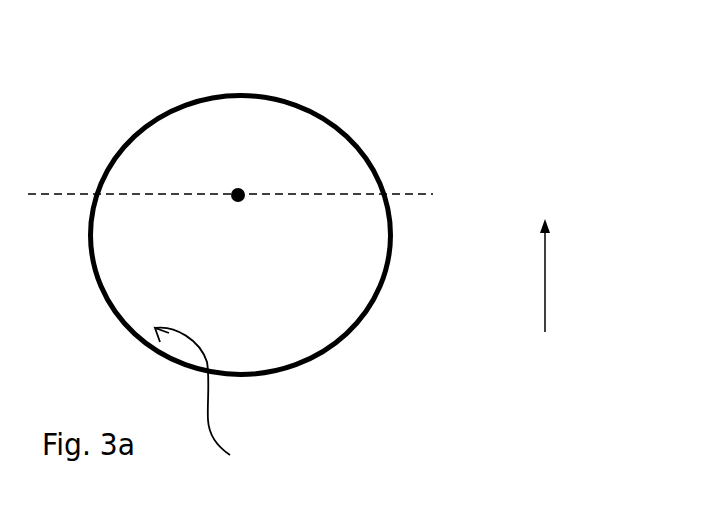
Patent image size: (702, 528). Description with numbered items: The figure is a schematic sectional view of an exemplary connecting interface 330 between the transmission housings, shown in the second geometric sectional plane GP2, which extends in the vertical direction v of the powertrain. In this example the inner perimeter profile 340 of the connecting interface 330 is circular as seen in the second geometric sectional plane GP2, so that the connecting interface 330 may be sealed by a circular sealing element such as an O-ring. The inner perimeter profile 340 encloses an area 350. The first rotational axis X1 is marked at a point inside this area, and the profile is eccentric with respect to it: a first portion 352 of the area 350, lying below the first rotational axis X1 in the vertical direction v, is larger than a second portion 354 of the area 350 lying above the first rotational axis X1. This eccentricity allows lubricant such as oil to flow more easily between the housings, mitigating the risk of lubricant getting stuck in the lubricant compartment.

The connecting interface 330 is at (293, 370).
The inner perimeter profile 340 is at (210, 410).
The area 350 is at (265, 287).
The first portion 352 is at (178, 243).
The second portion 354 is at (178, 173).
The first rotational axis X1 is at (254, 177).
The second geometric sectional plane GP2 is at (483, 118).
The vertical direction v is at (559, 275).